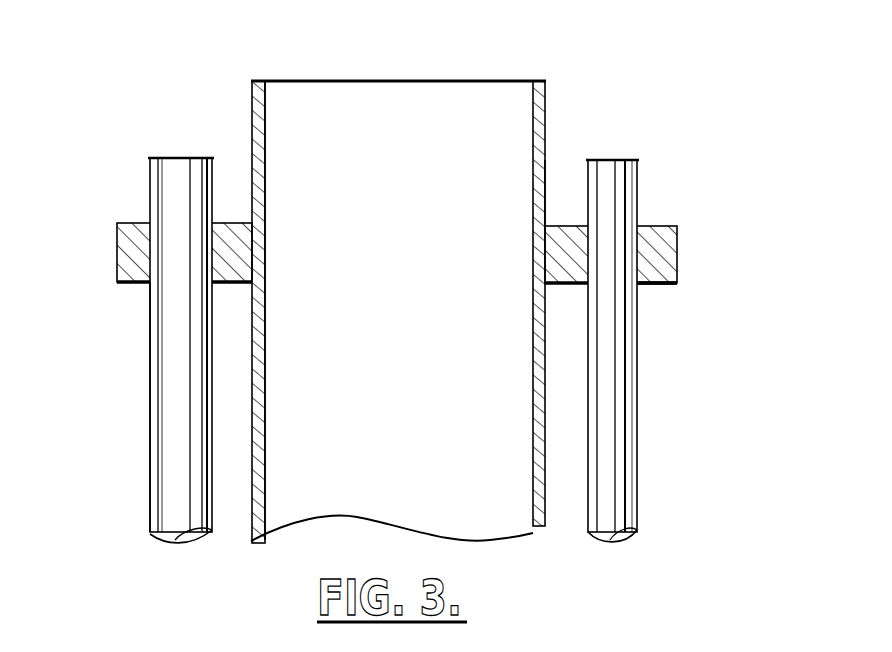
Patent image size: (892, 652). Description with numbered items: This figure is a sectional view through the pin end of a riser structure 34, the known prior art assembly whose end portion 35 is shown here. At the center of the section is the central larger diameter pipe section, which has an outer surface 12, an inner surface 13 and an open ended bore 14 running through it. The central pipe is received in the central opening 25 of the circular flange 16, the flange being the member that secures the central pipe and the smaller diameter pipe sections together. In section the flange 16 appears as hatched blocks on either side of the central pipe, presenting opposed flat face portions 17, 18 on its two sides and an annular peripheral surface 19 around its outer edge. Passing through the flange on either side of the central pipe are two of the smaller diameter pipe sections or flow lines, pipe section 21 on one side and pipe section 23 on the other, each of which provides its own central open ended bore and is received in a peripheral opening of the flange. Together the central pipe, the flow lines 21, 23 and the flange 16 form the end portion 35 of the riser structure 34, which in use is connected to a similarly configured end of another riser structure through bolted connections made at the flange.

The outer surface 12 is at (250, 117).
The inner surface 13 is at (267, 155).
The open ended bore 14 is at (440, 147).
The circular flange 16 is at (677, 237).
The flat face portion 17 is at (130, 223).
The flat face portion 18 is at (672, 290).
The annular peripheral surface 19 is at (117, 250).
The smaller diameter pipe section 21 is at (152, 326).
The smaller diameter pipe section 23 is at (625, 323).
The central opening 25 is at (547, 222).
The riser structure 34 is at (135, 518).
The end portion 35 is at (132, 80).